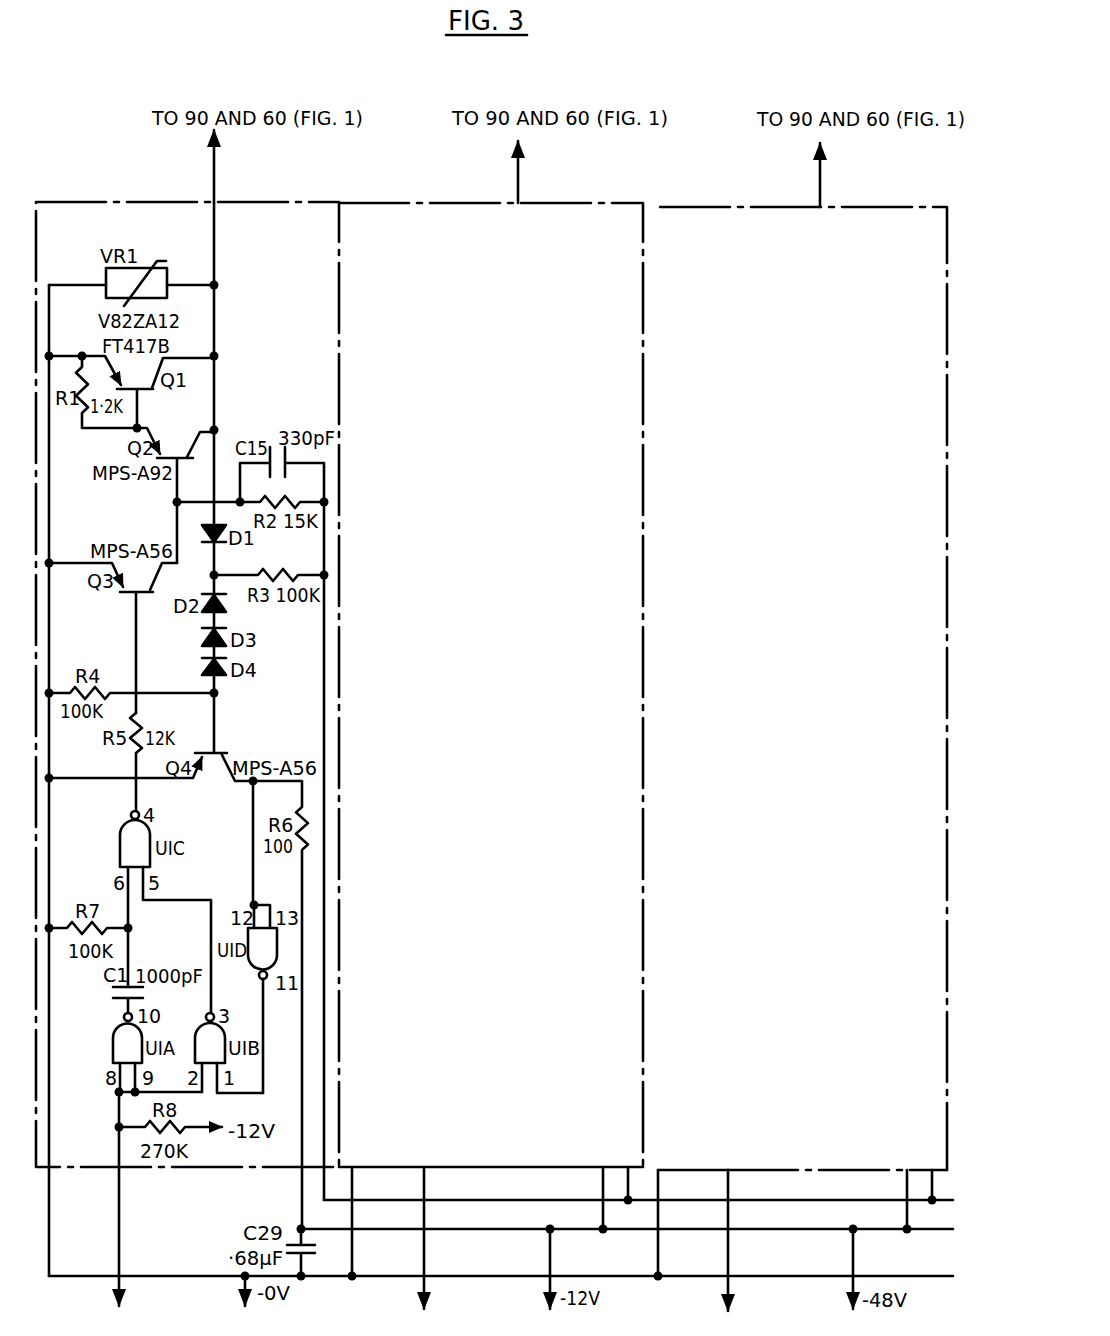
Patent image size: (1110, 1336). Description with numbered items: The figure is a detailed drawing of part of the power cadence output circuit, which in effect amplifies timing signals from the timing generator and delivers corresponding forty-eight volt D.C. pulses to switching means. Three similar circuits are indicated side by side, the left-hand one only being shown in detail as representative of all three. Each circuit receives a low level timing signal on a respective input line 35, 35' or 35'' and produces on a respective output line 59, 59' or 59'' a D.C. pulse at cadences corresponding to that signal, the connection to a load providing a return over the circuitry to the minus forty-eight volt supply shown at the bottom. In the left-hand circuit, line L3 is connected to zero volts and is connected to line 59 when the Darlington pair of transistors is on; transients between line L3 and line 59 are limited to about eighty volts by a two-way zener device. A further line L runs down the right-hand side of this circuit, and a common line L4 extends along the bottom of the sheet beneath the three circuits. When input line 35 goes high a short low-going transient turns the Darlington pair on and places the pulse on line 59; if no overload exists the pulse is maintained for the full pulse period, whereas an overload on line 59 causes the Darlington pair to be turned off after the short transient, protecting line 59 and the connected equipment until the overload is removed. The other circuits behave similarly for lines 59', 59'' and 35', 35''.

The output line 59 is at (186, 166).
The output line 59' is at (489, 172).
The output line 59'' is at (793, 175).
The input line 35 is at (144, 1271).
The input line 35' is at (453, 1238).
The input line 35'' is at (757, 1240).
The line L is at (324, 653).
The zero volt line L3 is at (48, 883).
The common line L4 is at (490, 1200).